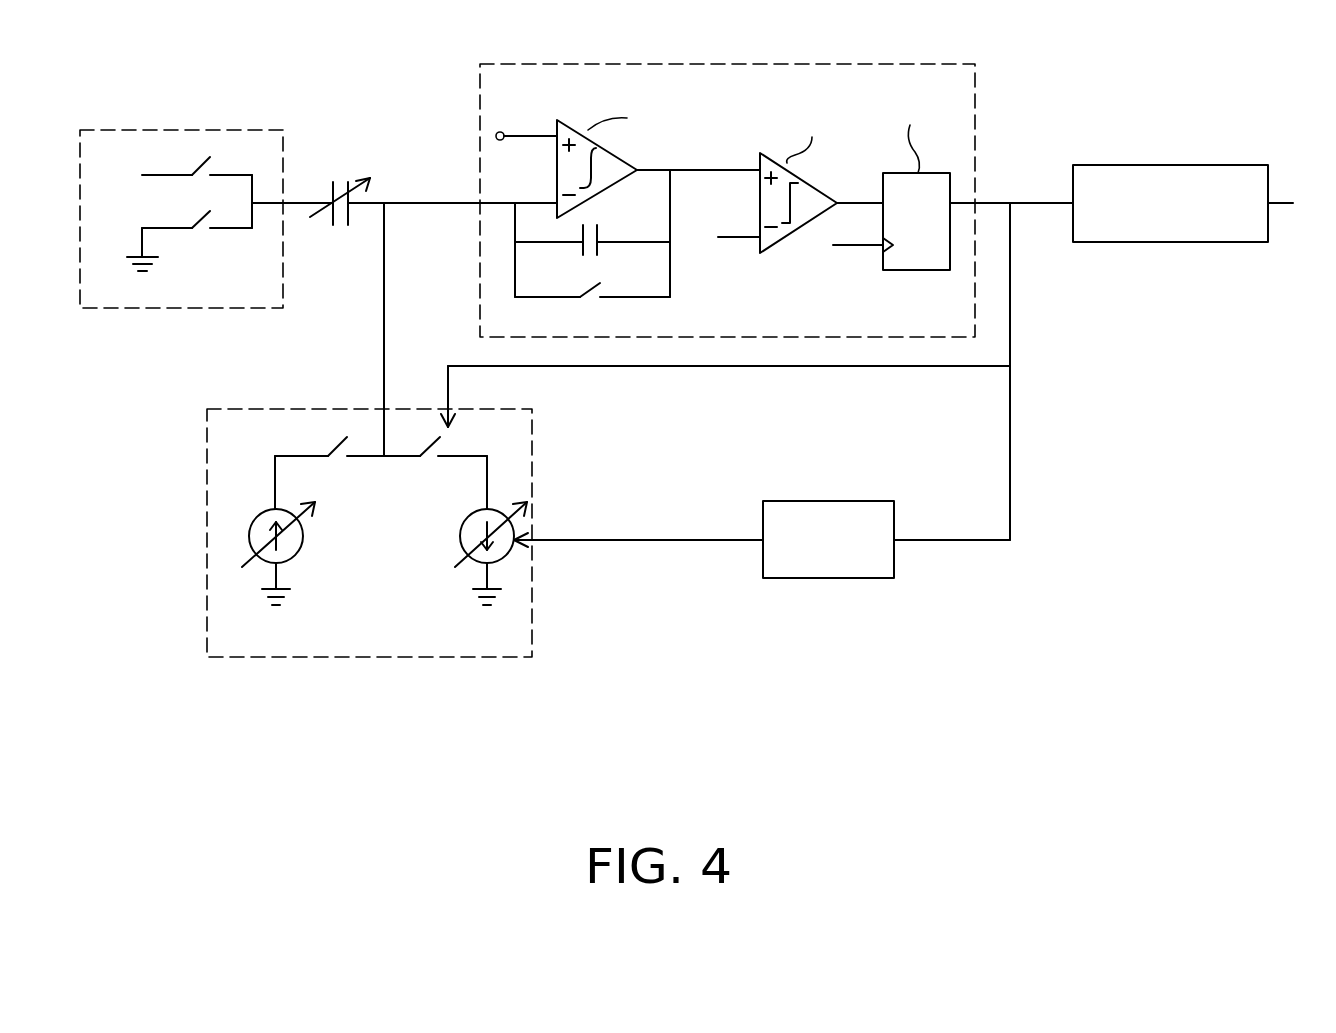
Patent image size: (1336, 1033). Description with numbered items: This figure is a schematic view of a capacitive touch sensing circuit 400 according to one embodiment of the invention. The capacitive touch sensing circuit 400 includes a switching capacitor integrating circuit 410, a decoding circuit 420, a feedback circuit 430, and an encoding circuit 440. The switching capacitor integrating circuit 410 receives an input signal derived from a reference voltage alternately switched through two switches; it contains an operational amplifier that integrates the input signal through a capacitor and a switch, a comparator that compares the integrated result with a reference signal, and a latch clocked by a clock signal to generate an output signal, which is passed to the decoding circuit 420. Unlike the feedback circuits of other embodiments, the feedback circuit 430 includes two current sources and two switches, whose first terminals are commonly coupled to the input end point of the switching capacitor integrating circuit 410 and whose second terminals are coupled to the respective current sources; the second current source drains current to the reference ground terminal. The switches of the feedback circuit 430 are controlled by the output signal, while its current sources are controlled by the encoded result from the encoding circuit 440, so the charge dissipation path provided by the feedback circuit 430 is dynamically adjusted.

The capacitive touch sensing circuit 400 is at (1206, 762).
The switching capacitor integrating circuit 410 is at (862, 63).
The decoding circuit 420 is at (1143, 165).
The feedback circuit 430 is at (532, 603).
The encoding circuit 440 is at (828, 578).